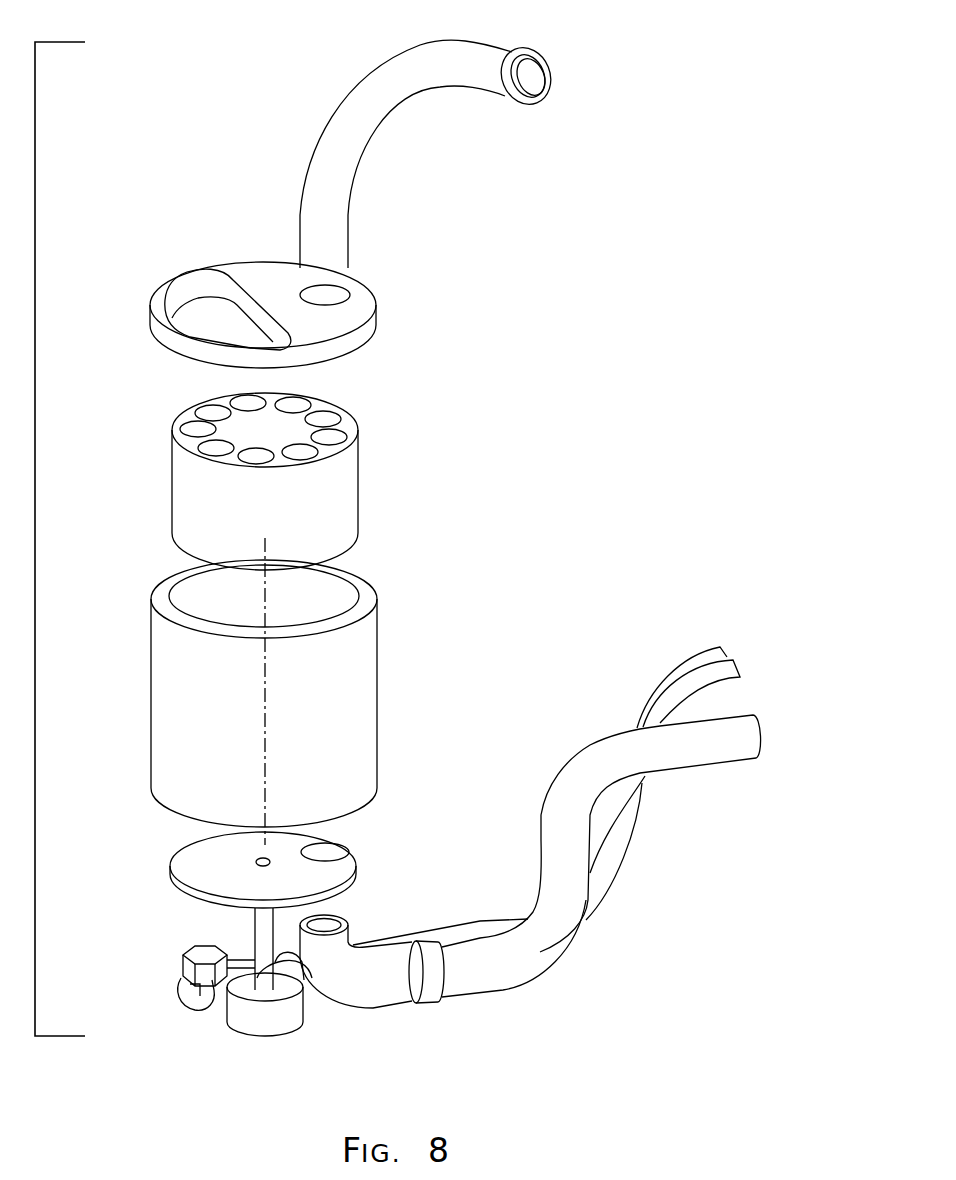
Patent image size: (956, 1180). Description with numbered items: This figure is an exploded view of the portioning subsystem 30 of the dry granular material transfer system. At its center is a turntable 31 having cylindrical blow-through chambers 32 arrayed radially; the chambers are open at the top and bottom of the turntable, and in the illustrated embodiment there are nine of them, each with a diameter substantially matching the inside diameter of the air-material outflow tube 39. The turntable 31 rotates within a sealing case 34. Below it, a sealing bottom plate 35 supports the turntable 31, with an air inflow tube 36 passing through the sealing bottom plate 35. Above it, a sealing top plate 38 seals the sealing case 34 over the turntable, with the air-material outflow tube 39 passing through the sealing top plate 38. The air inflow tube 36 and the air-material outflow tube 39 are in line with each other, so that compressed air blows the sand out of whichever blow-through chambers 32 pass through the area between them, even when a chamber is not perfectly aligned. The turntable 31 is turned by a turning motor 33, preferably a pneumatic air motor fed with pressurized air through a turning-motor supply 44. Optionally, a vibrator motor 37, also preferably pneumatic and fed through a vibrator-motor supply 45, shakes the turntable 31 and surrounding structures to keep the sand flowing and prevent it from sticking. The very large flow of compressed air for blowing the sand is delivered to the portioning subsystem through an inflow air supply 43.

The portioning subsystem 30 is at (124, 26).
The turntable 31 is at (172, 486).
The blow-through chambers 32 is at (179, 423).
The turning motor 33 is at (260, 1028).
The sealing case 34 is at (156, 681).
The sealing bottom plate 35 is at (180, 853).
The air inflow tube 36 is at (385, 1000).
The vibrator motor 37 is at (186, 966).
The sealing top plate 38 is at (268, 266).
The air-material outflow tube 39 is at (334, 111).
The inflow air supply 43 is at (489, 986).
The turning-motor supply 44 is at (303, 978).
The vibrator-motor supply 45 is at (200, 1002).